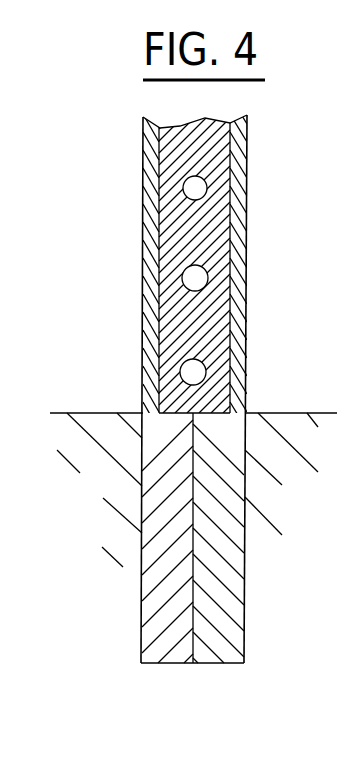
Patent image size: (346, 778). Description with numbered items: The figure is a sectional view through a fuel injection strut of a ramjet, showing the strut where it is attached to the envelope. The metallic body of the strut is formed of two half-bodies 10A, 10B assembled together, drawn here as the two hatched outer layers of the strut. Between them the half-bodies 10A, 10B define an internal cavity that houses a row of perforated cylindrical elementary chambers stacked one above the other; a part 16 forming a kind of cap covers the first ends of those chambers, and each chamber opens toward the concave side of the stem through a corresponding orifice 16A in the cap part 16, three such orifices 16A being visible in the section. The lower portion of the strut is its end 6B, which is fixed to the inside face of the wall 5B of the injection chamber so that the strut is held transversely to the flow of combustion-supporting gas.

The half-body 10A is at (247, 154).
The half-body 10B is at (143, 179).
The cap part 16 is at (154, 258).
The orifice 16A is at (202, 277).
The wall of the injection chamber 5B is at (83, 420).
The end of the injection strut 6B is at (152, 598).